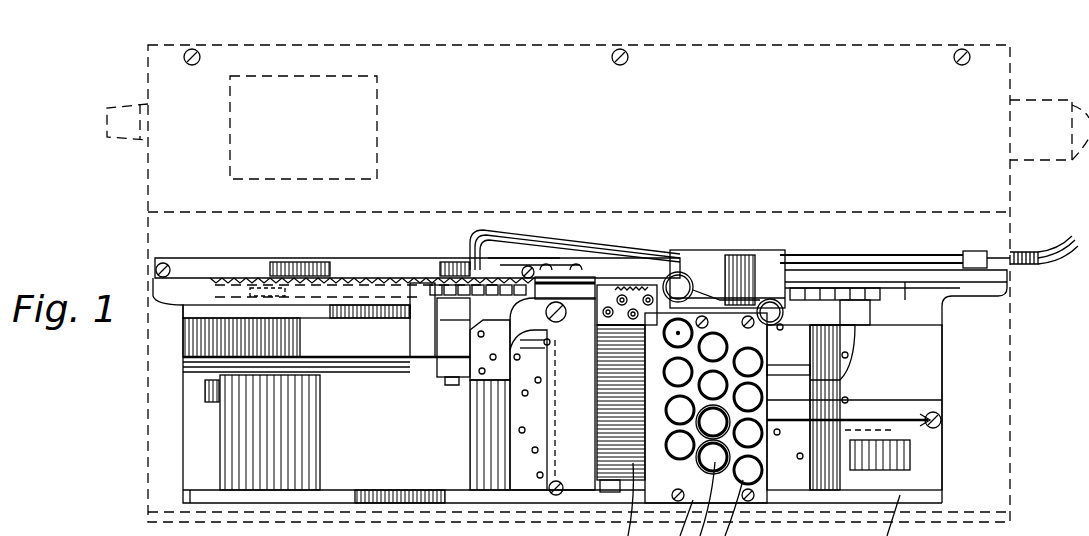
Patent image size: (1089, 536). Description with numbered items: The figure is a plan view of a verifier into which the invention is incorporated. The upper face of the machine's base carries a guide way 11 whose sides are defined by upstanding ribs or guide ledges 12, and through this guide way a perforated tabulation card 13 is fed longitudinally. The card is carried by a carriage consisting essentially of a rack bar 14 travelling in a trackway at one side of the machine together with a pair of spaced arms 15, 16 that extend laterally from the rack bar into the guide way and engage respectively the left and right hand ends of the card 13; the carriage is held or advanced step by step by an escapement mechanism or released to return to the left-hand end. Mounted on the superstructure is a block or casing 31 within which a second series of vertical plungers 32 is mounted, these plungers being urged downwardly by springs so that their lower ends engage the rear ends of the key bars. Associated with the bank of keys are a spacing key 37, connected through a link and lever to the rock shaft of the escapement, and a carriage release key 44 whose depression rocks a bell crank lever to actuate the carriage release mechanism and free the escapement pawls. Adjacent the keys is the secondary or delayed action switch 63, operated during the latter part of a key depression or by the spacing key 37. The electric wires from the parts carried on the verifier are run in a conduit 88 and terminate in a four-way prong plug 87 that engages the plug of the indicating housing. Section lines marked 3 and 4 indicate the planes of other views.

The section line 3-3 / keyboard 3 is at (445, 470).
The section line 4- 4 is at (457, 268).
The guide way 11 is at (207, 408).
The guide ledges 12 is at (920, 314).
The perforated tabulation card 13 is at (478, 425).
The rack bar 14 is at (832, 290).
The arm 15 is at (420, 338).
The arm 16 is at (855, 345).
The block or casing 31 is at (540, 348).
The vertical plungers 32 is at (512, 410).
The spacing key 37 is at (772, 310).
The carriage release key 44 is at (680, 285).
The secondary or delayed action switch 63 is at (752, 268).
The four-way prong plug 87 is at (1047, 98).
The conduit 88 is at (943, 256).